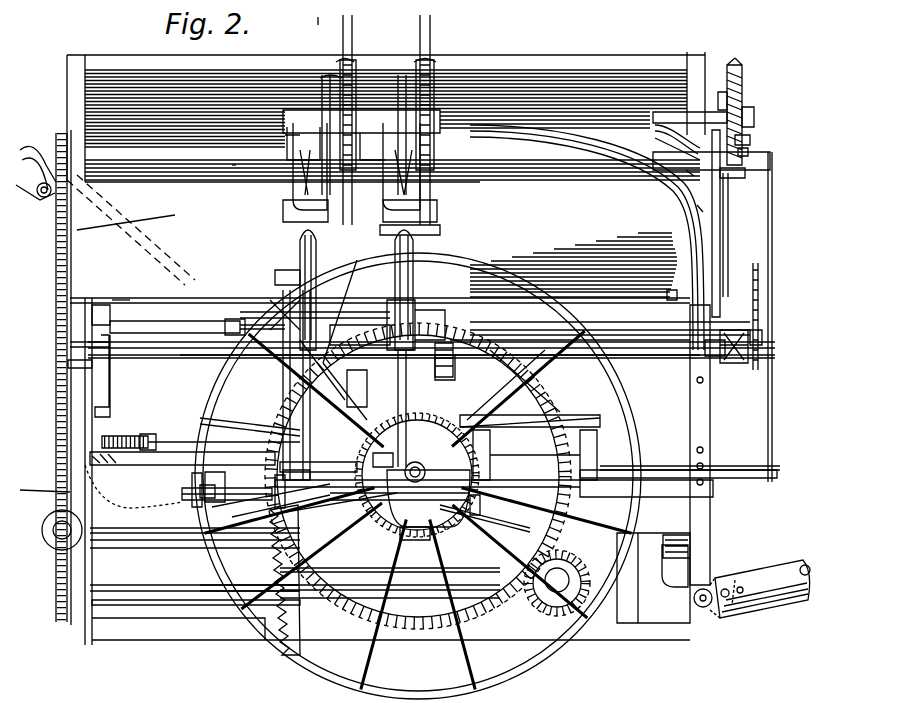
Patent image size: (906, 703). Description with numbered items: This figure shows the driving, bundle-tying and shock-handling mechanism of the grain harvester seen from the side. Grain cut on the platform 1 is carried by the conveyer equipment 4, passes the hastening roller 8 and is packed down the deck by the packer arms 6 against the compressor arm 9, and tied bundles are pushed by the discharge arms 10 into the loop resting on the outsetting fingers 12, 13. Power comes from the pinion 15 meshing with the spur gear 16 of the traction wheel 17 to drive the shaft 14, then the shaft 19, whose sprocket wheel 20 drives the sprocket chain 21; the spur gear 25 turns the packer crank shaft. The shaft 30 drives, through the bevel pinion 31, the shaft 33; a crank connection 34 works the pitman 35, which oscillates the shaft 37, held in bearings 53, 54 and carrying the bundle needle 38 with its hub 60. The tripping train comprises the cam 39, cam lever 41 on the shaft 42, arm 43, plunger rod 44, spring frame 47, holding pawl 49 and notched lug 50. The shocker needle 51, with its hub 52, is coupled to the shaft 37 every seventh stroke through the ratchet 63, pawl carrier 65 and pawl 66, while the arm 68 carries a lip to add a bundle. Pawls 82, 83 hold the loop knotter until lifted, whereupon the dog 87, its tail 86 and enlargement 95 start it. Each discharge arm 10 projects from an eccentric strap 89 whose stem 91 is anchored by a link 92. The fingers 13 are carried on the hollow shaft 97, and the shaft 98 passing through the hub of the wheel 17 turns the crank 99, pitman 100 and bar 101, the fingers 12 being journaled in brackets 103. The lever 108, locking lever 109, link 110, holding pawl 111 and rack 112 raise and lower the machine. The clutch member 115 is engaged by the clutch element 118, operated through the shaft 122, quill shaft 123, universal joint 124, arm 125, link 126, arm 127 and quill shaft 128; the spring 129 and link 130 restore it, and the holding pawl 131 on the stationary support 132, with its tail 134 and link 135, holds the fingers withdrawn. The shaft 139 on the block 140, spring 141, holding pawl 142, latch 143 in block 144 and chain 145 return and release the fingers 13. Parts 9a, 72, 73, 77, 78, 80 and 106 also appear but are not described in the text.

The grain supporting platform 1 is at (75, 412).
The grain conveyer equipment 4 is at (121, 150).
The packer arms 6 is at (318, 24).
The hastening roller 8 is at (234, 165).
The arm 9 is at (420, 230).
The bar 9a is at (320, 82).
The discharge arms 10 is at (352, 185).
The fingers 12 is at (480, 488).
The fingers 13 is at (250, 513).
The shaft 14 is at (570, 620).
The pinion 15 is at (615, 600).
The spur gear 16 is at (505, 600).
The traction wheel 17 is at (562, 655).
The shaft 19 is at (165, 585).
The sprocket wheel 20 is at (62, 605).
The sprocket chain 21 is at (60, 550).
The spur gear 25 is at (440, 312).
The shaft 30 is at (728, 210).
The bevel pinion 31 is at (750, 137).
The shaft 33 is at (755, 115).
The crank connection 34 is at (772, 160).
The pitman 35 is at (770, 245).
The shaft 37 is at (338, 320).
The needle 38 is at (742, 80).
The cam 39 is at (722, 92).
The cam lever 41 is at (660, 125).
The shaft 42 is at (655, 138).
The arm 43 is at (690, 172).
The plunger rod 44 is at (700, 210).
The frame 47 is at (760, 253).
The holding pawl 49 is at (748, 172).
The notched lug 50 is at (745, 150).
The needle 51 is at (304, 240).
The hub 52 is at (295, 272).
The bearing 53 is at (518, 300).
The bearing 54 is at (86, 318).
The hub 60 is at (375, 255).
The ratchet 63 is at (275, 300).
The pawl carrier 65 is at (210, 323).
The pawl 66 is at (150, 322).
The arm 68 is at (415, 255).
The spoke 72 is at (300, 365).
The bar 73 is at (328, 310).
The link 77 is at (305, 383).
The bar 78 is at (575, 350).
The base 80 is at (437, 208).
The pawl 82 is at (72, 365).
The pawl 83 is at (455, 365).
The tail 86 is at (352, 98).
The dog 87 is at (356, 135).
The eccentric strap 89 is at (354, 60).
The stem 91 is at (338, 60).
The link 92 is at (440, 56).
The enlargement 95 is at (288, 112).
The shaft 97 is at (328, 490).
The shaft 98 is at (415, 528).
The crank 99 is at (380, 535).
The pitman 100 is at (520, 385).
The bar 101 is at (570, 414).
The brackets 103 is at (500, 457).
The post 106 is at (268, 370).
The lever 108 is at (490, 428).
The locking lever 109 is at (36, 148).
The link 110 is at (168, 256).
The holding pawl 111 is at (350, 390).
The rack 112 is at (250, 580).
The clutch member 115 is at (420, 540).
The clutch roller support 118 is at (340, 398).
The shaft 122 is at (280, 405).
The quill shaft 123 is at (165, 455).
The universal joint 124 is at (290, 380).
The arm 125 is at (105, 436).
The link 126 is at (108, 375).
The arm 127 is at (78, 336).
The quill shaft 128 is at (122, 318).
The spring 129 is at (182, 490).
The link 130 is at (205, 420).
The holding pawl 131 is at (480, 505).
The stationary support 132 is at (668, 465).
The tail 134 is at (750, 480).
The link 135 is at (773, 405).
The shaft 139 is at (182, 494).
The block 140 is at (385, 575).
The spring 141 is at (288, 598).
The holding pawl 142 is at (165, 512).
The latch 143 is at (222, 480).
The block 144 is at (225, 492).
The chain 145 is at (95, 480).